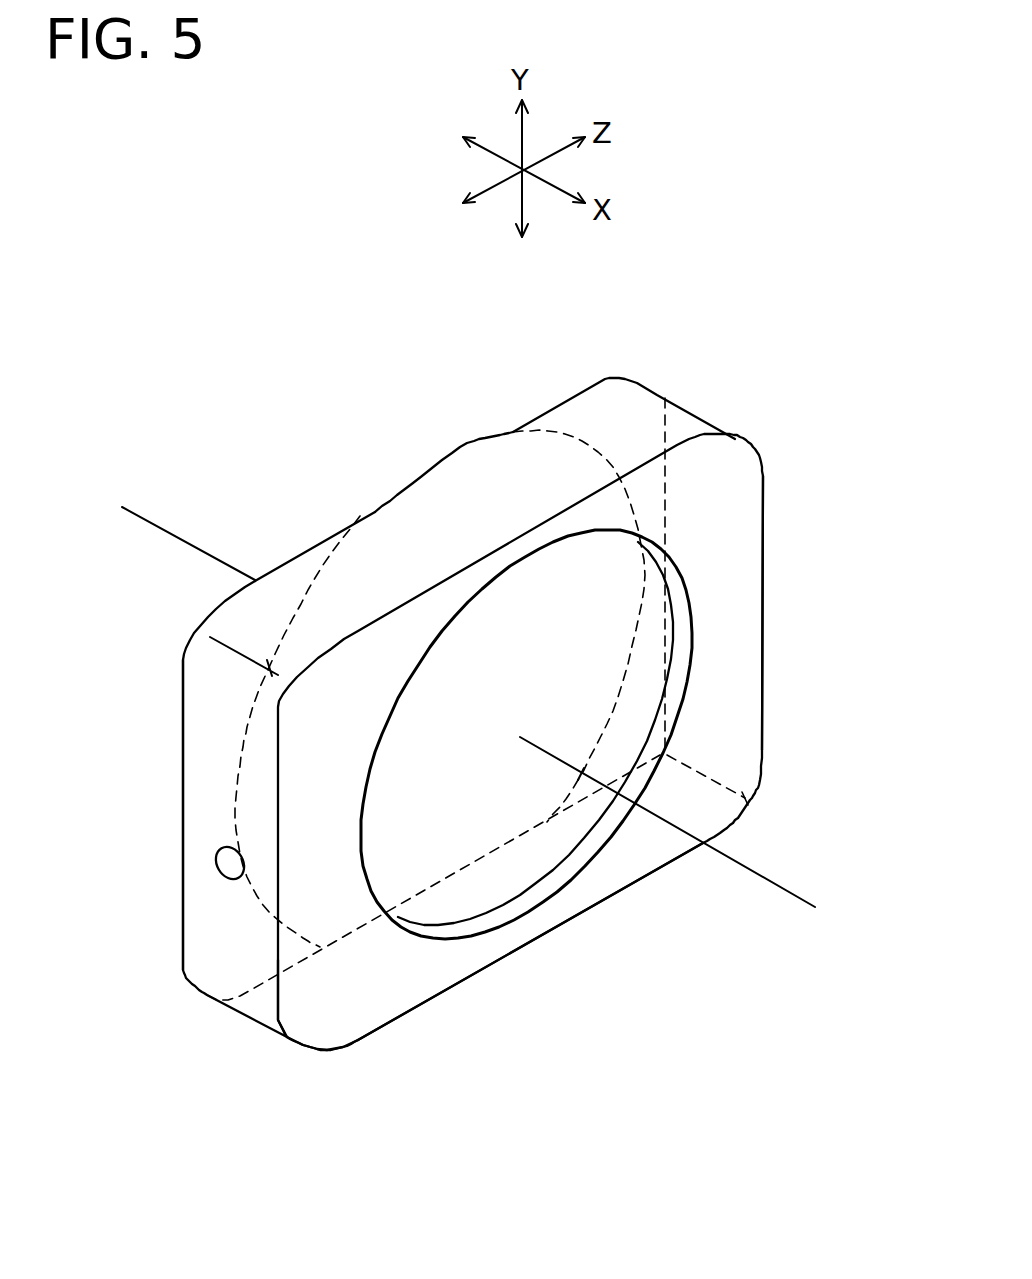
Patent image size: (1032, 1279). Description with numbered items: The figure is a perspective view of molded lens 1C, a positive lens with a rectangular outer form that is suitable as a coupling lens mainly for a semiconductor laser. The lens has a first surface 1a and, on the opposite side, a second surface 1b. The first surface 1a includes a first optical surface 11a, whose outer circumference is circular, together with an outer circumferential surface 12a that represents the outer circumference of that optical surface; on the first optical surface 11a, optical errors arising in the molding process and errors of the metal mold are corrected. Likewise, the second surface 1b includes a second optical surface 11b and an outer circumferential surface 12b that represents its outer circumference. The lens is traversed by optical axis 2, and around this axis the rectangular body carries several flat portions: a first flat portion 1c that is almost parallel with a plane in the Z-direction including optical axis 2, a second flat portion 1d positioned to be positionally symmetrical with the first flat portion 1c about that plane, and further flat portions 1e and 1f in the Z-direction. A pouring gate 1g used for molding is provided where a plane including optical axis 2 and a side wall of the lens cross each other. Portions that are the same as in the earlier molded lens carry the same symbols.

The molded lens 1C is at (496, 382).
The first surface 1a is at (420, 1126).
The second surface 1b is at (400, 398).
The first optical surface 11a is at (413, 857).
The outer circumferential surface 12a is at (328, 1002).
The second optical surface 11b is at (380, 475).
The outer circumferential surface 12b is at (310, 522).
The first flat portion 1c is at (468, 982).
The second flat portion 1d is at (642, 428).
The flat portion 1e is at (218, 765).
The flat portion 1f is at (765, 590).
The pouring gate 1g is at (217, 864).
The optical axis 2 is at (788, 890).